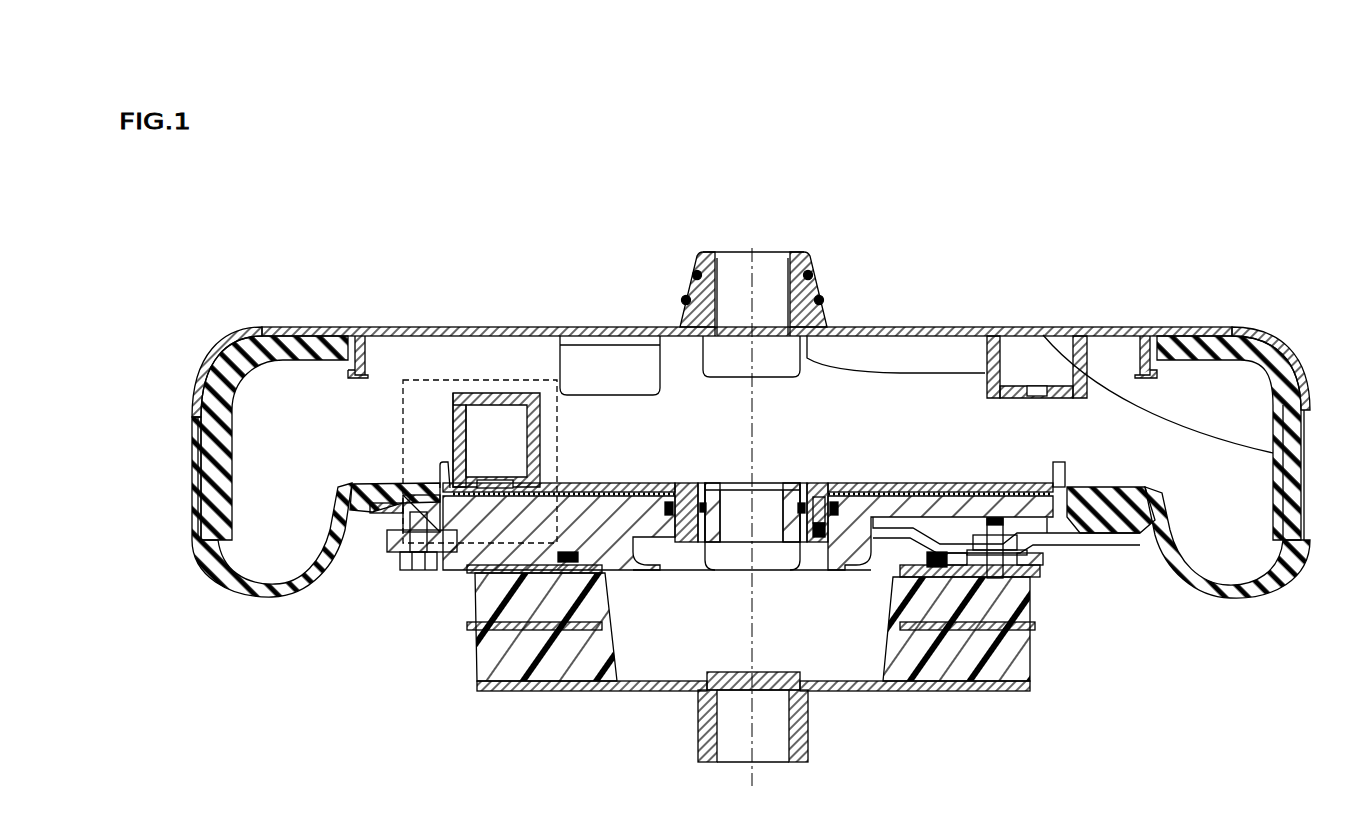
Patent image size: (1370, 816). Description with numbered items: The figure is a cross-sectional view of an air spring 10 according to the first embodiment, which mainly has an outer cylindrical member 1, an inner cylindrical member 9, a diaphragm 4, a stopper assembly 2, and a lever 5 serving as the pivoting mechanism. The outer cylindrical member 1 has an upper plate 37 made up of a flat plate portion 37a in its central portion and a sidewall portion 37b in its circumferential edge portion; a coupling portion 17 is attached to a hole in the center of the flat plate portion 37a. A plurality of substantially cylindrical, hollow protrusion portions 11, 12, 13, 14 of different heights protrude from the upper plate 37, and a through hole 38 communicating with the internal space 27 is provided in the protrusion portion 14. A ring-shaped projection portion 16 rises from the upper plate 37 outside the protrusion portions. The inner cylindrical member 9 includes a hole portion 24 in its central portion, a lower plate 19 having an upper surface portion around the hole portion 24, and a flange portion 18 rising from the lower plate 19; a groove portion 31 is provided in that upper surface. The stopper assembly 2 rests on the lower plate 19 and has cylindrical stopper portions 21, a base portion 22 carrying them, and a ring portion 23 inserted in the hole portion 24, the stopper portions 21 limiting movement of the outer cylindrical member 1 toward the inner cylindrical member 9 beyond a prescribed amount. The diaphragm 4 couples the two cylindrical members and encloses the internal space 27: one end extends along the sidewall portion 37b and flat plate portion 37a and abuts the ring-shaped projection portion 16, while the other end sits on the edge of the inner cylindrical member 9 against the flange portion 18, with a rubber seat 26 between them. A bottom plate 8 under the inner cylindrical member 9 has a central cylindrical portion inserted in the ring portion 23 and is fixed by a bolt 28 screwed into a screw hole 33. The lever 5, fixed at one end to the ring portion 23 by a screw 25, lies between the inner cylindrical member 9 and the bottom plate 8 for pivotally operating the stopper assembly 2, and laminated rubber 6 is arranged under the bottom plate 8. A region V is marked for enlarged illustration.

The outer cylindrical member 1 is at (1195, 180).
The stopper assembly 2 is at (505, 285).
The diaphragm 4 is at (1229, 592).
The lever 5 is at (1060, 550).
The laminated rubber 6 is at (572, 667).
The bottom plate 8 is at (1040, 547).
The inner cylindrical member 9 is at (452, 663).
The air spring 10 is at (1233, 199).
The protrusion portion 11 is at (538, 332).
The protrusion portion 12 is at (548, 334).
The protrusion portion 13 is at (735, 345).
The protrusion portion 14 is at (775, 335).
The ring-shaped projection portion 16 is at (1165, 330).
The coupling portion 17 is at (773, 330).
The flange portion 18 is at (443, 467).
The lower plate 19 is at (480, 507).
The stopper portion 21 is at (447, 443).
The base portion 22 is at (458, 396).
The ring portion 23 is at (557, 445).
The hole portion 24 is at (688, 542).
The screw 25 is at (820, 545).
The rubber seat 26 is at (1143, 533).
The internal space 27 is at (1255, 428).
The bolt 28 is at (420, 570).
The groove portion 31 is at (663, 505).
The screw hole 33 is at (398, 522).
The upper plate 37 is at (1030, 217).
The flat plate portion 37a is at (968, 333).
The sidewall portion 37b is at (1043, 335).
The through hole 38 is at (1033, 388).
The region V is at (403, 438).